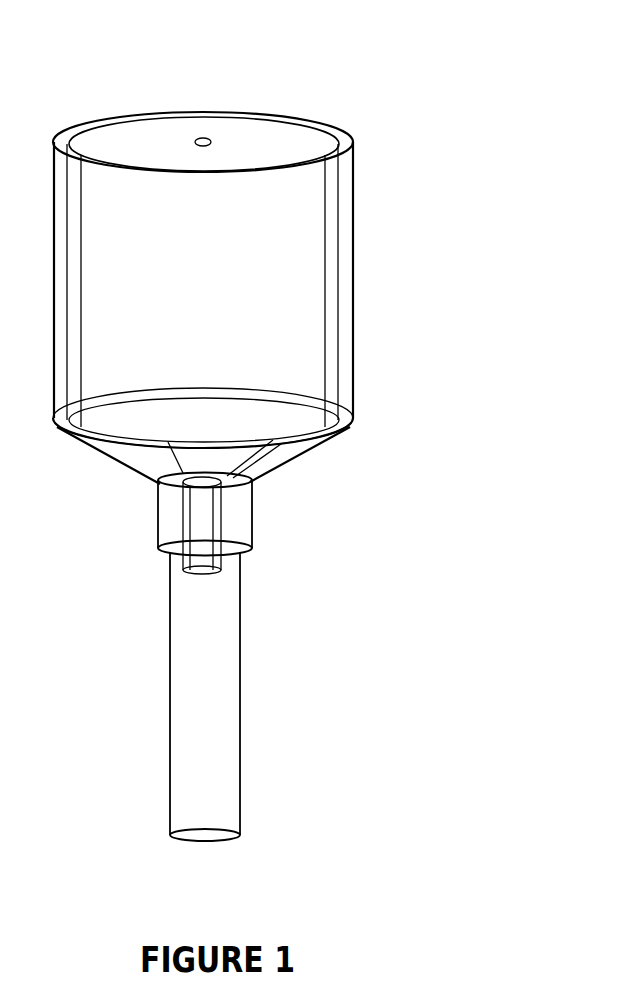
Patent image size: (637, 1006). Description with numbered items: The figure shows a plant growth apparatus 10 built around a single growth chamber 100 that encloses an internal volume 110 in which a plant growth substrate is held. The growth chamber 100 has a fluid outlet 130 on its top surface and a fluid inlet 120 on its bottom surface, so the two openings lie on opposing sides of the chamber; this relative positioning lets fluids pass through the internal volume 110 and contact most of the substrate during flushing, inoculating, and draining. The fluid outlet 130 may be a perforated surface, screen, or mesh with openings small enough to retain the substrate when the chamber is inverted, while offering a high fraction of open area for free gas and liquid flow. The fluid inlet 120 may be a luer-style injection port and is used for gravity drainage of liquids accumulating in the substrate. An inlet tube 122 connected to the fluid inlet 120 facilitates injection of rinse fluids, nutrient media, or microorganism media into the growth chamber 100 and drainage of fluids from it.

The plant growth apparatus 10 is at (433, 95).
The growth chamber 100 is at (353, 268).
The internal volume 110 is at (231, 295).
The fluid outlet 130 is at (283, 118).
The fluid inlet 120 is at (252, 530).
The inlet tube 122 is at (240, 733).